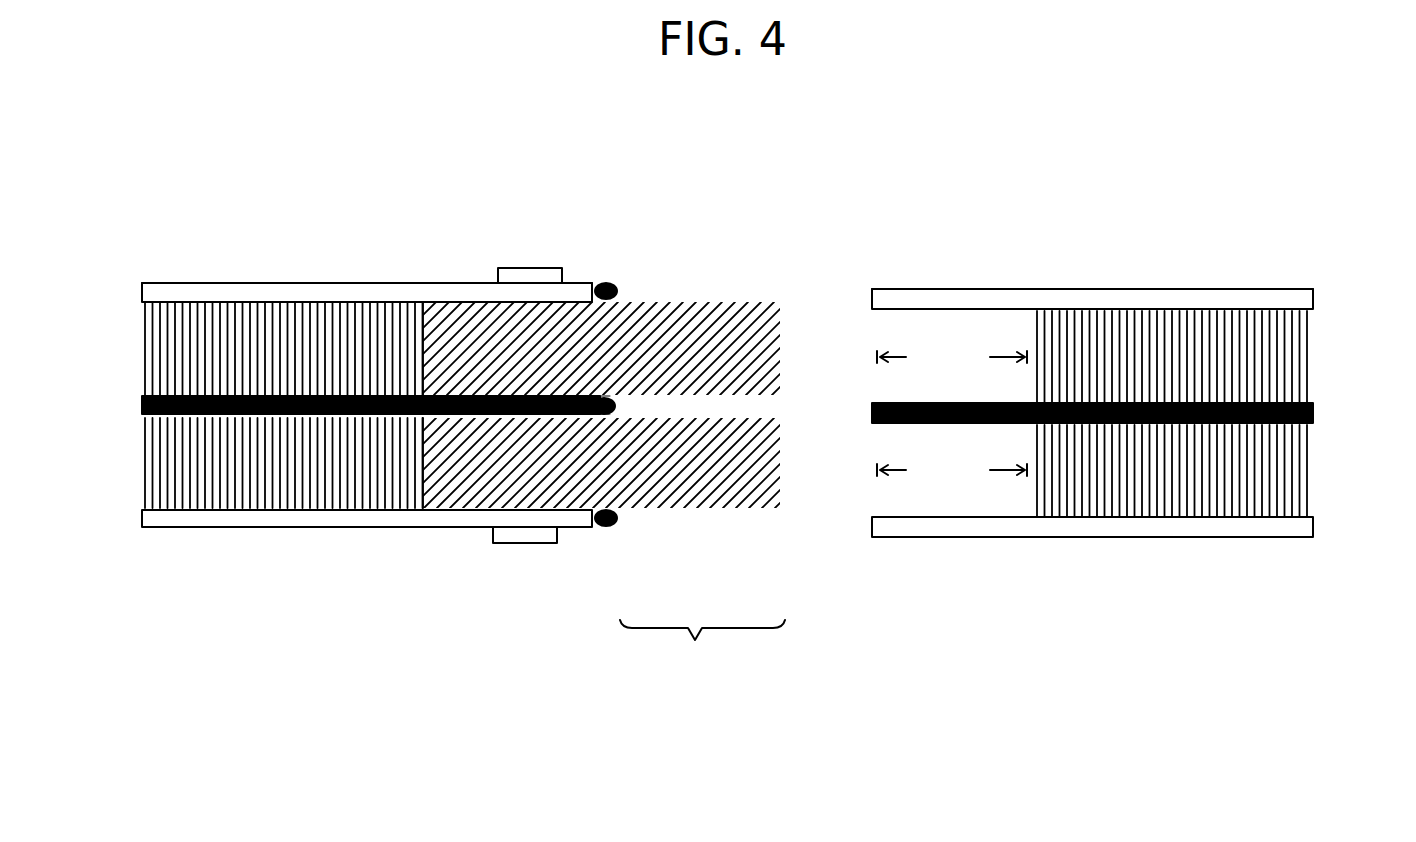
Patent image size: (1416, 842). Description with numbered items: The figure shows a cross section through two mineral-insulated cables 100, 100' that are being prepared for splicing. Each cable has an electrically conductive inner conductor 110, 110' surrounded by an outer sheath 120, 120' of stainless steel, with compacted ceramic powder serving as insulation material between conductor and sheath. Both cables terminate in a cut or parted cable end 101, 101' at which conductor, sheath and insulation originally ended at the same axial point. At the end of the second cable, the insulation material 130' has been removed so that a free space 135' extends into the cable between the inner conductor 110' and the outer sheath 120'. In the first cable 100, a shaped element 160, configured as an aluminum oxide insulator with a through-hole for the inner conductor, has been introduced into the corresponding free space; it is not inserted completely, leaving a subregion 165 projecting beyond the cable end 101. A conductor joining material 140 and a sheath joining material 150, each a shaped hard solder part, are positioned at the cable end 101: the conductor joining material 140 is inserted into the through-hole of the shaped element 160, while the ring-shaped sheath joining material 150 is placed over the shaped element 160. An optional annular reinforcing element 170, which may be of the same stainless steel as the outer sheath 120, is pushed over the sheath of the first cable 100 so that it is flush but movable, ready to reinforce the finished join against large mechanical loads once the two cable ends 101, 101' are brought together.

The first mineral-insulated cable 100 is at (456, 391).
The second mineral-insulated cable 100' is at (1143, 322).
The cable end of first cable 101 is at (367, 232).
The cable end of second cable 101' is at (1092, 232).
The inner conductor 110 is at (324, 404).
The inner conductor 110' is at (1136, 413).
The outer sheath 120 is at (320, 407).
The outer sheath 120' is at (1138, 413).
The insulation material 130' is at (1219, 471).
The free space 135' is at (952, 414).
The conductor joining material 140 is at (620, 404).
The sheath joining material 150 is at (608, 283).
The shaped element 160 is at (713, 305).
The projecting subregion 165 is at (702, 653).
The reinforcing element 170 is at (500, 270).